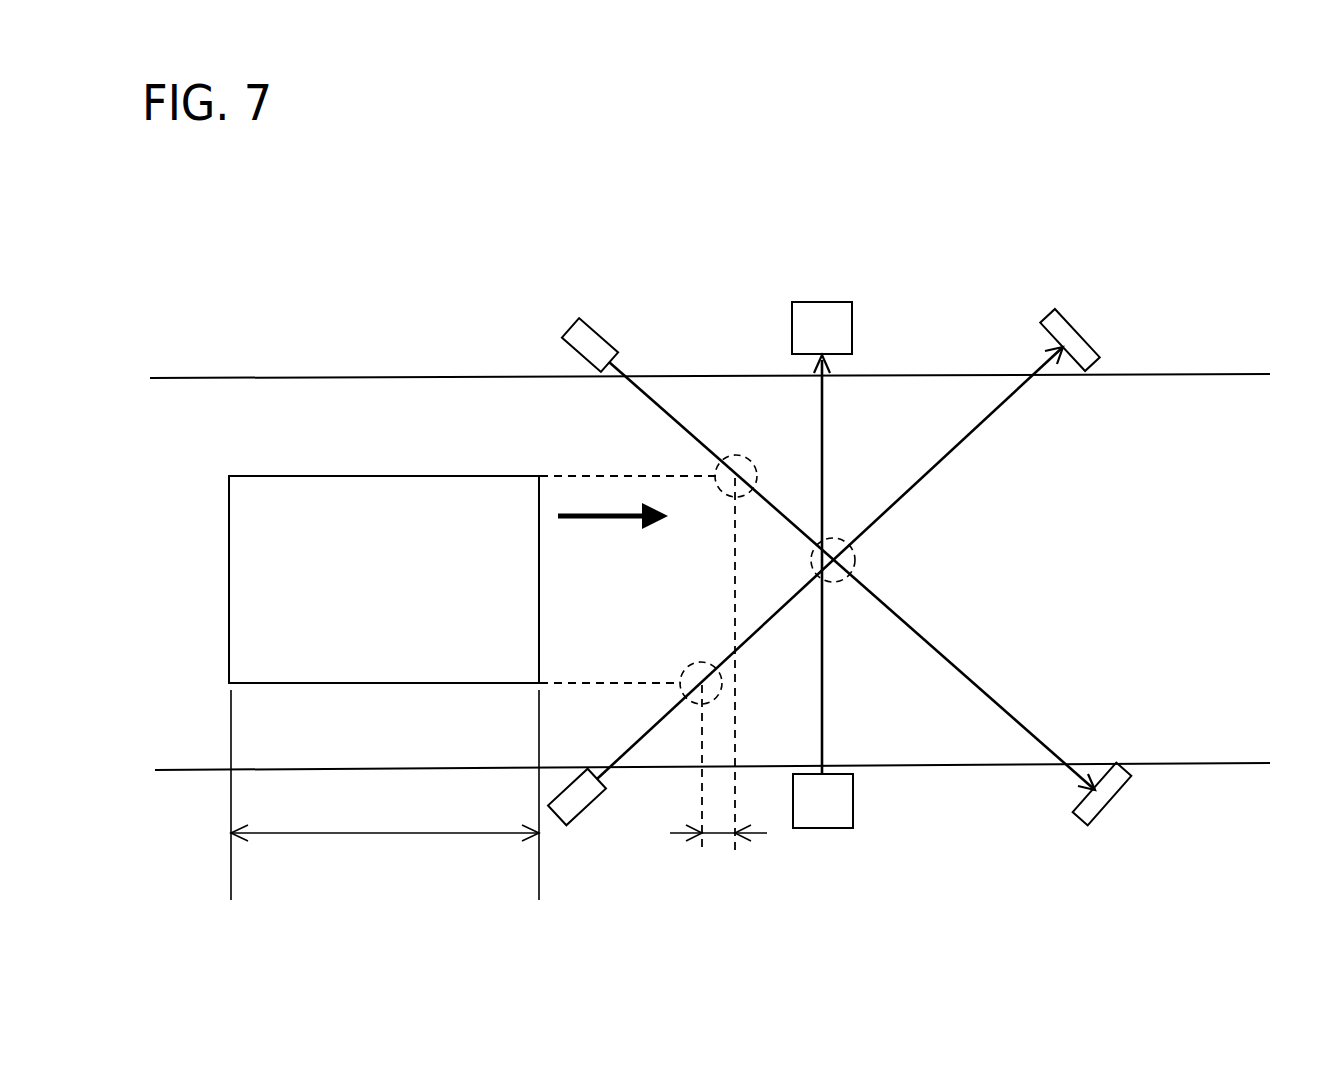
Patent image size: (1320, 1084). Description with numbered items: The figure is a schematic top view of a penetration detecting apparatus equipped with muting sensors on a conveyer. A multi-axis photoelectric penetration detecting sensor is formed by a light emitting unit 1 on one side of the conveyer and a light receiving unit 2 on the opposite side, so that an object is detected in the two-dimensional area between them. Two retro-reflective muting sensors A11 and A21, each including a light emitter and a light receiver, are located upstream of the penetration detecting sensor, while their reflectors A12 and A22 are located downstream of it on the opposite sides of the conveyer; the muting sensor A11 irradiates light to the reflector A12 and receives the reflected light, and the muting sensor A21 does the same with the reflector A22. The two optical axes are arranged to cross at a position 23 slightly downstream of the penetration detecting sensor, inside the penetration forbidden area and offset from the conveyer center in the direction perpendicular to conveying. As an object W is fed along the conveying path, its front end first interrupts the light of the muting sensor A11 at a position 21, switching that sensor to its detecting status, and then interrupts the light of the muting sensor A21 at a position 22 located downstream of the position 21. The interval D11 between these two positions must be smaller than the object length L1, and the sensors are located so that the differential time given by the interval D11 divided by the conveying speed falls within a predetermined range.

The object W is at (298, 475).
The object length L1 is at (385, 795).
The interval D11 is at (718, 848).
The muting sensor A21 is at (595, 328).
The muting sensor A11 is at (582, 810).
The reflector A12 is at (1088, 328).
The reflector A22 is at (1097, 815).
The light emitting unit 1 is at (823, 830).
The light receiving unit 2 is at (815, 302).
The position 21 is at (692, 664).
The position 22 is at (733, 455).
The position 23 is at (856, 560).